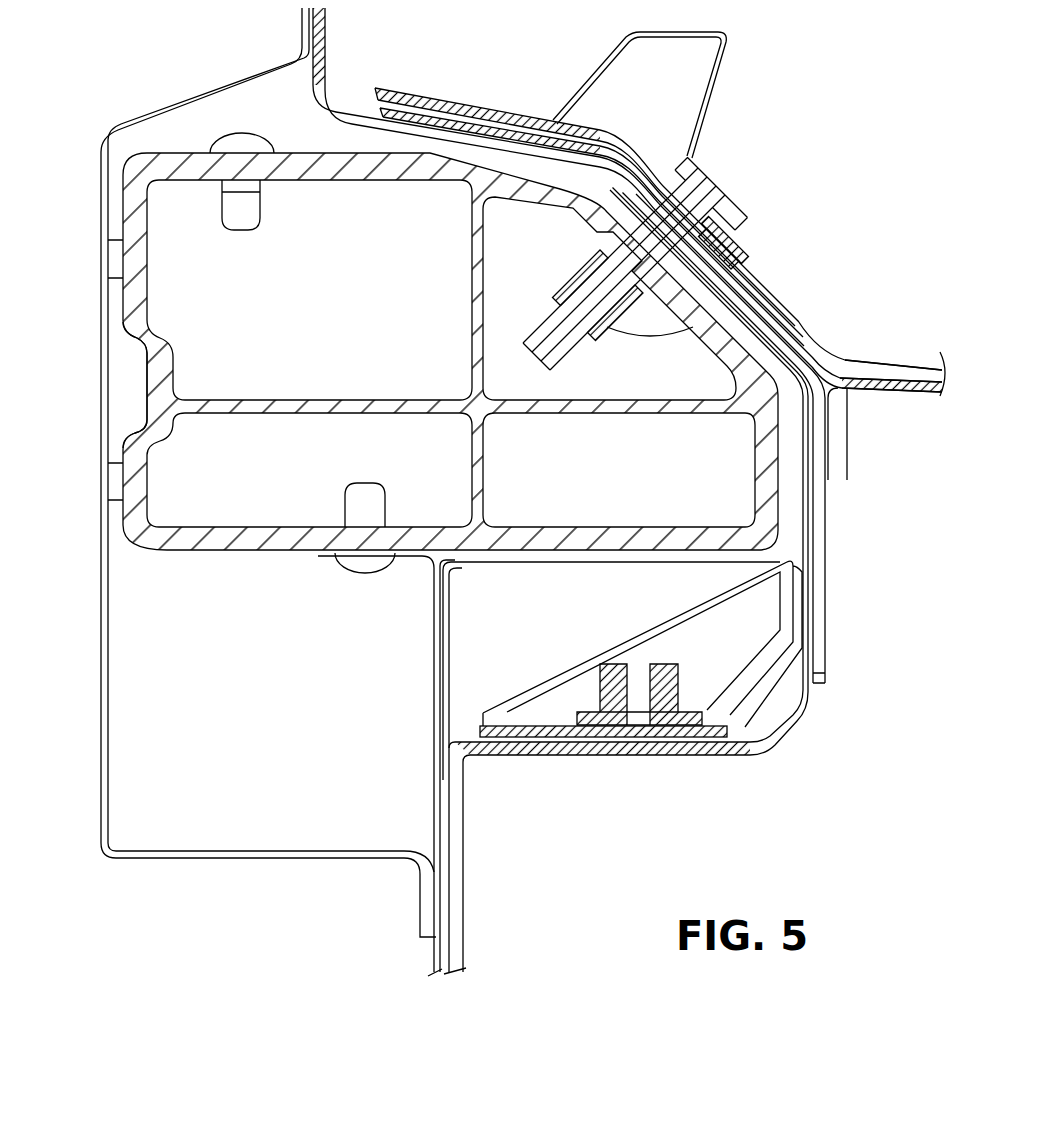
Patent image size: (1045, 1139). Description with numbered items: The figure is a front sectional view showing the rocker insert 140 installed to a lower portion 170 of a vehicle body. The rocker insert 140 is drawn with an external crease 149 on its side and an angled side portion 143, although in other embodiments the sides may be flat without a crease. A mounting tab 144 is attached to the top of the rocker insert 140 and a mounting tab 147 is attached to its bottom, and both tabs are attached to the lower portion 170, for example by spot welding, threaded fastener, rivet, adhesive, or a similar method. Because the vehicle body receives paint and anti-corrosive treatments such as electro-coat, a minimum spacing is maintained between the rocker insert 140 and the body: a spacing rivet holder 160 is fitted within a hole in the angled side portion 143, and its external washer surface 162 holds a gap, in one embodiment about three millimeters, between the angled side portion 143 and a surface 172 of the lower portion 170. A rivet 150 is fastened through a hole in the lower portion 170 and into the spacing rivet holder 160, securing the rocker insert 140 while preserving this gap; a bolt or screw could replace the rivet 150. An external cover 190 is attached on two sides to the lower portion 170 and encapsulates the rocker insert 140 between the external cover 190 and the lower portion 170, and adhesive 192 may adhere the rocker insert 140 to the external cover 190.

The rocker insert 140 is at (190, 553).
The angled side portion 143 is at (775, 338).
The mounting tab 144 is at (302, 118).
The mounting tab 147 is at (436, 765).
The external crease 149 is at (143, 378).
The rivet 150 is at (712, 168).
The spacing rivet holder 160 is at (735, 275).
The external washer surface 162 is at (752, 232).
The lower portion 170 is at (768, 742).
The surface 172 is at (438, 143).
The external cover 190 is at (117, 128).
The adhesive 192 is at (112, 259).